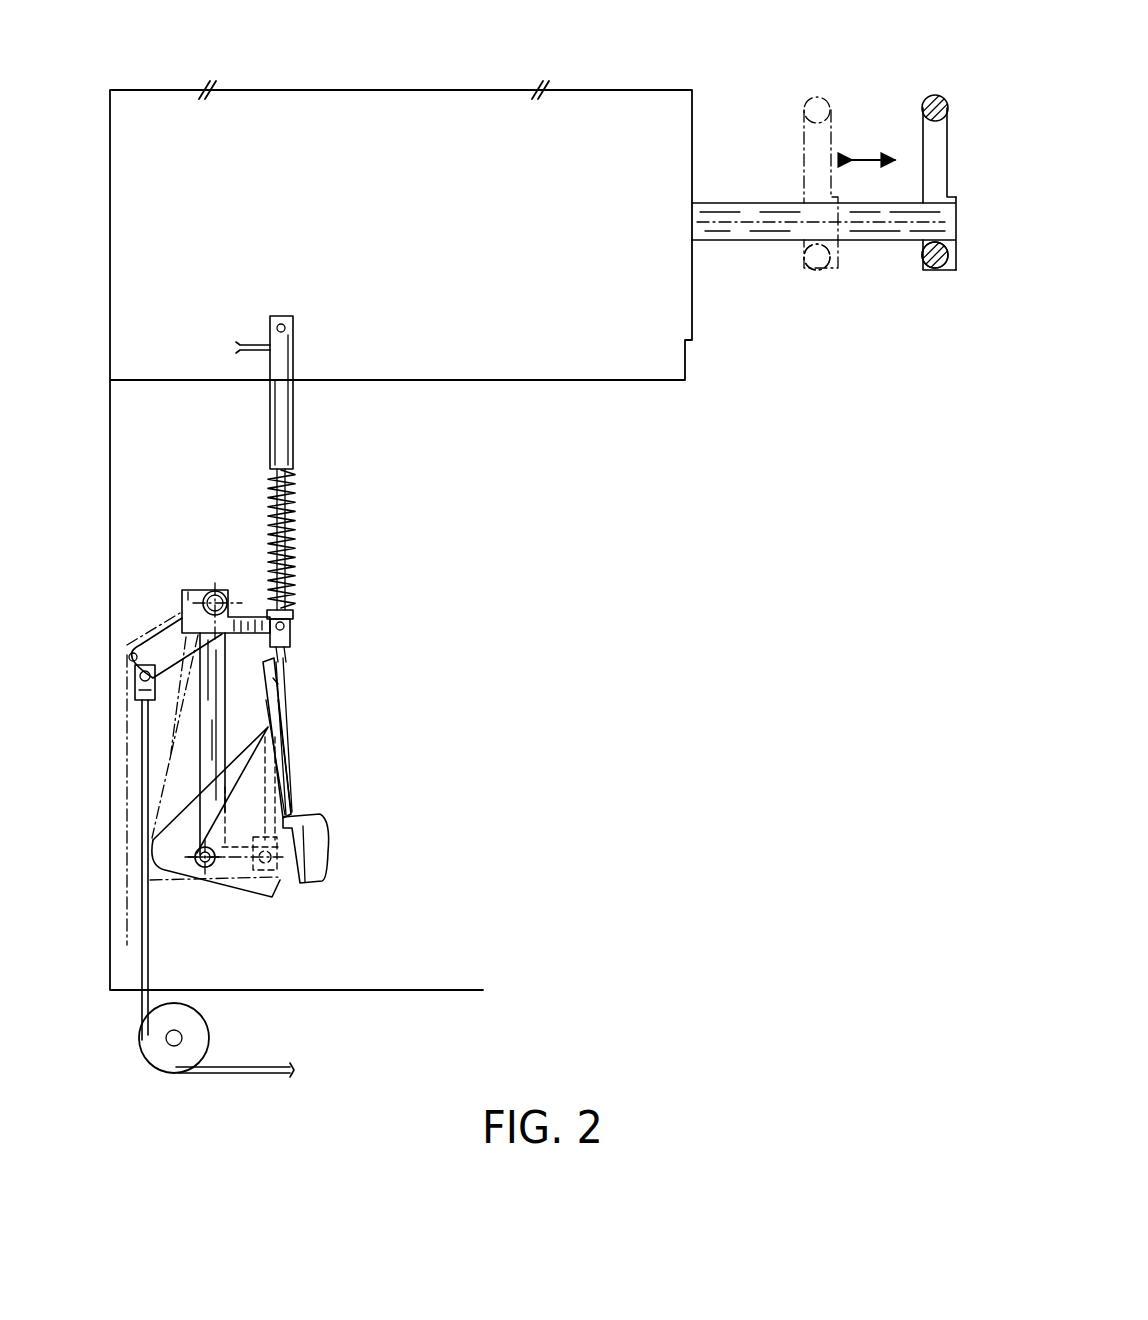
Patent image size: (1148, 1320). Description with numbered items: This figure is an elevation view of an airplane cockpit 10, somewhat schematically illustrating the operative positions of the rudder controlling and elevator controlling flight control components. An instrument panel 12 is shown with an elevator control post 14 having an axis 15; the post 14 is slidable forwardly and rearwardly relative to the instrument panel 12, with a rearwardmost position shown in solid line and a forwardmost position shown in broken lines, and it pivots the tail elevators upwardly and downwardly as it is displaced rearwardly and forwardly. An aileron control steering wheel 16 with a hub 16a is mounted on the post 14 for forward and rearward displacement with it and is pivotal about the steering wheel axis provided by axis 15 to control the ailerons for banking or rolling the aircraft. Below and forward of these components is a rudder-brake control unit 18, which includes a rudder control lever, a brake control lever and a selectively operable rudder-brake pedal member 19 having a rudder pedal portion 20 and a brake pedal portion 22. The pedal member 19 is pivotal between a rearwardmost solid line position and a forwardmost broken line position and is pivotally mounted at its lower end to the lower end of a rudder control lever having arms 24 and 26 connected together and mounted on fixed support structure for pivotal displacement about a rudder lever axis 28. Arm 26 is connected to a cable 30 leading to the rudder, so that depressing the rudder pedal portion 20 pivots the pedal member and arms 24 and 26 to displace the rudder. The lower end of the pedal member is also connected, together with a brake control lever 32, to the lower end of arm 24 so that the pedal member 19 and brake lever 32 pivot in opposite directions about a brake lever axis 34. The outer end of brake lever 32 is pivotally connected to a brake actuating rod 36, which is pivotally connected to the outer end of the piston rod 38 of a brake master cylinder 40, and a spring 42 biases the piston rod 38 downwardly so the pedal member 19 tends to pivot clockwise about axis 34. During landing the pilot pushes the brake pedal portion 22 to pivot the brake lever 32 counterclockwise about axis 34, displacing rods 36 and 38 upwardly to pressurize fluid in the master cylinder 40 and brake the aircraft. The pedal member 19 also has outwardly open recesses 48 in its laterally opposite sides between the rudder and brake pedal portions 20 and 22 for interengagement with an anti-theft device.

The airplane cockpit 10 is at (784, 654).
The instrument panel 12 is at (692, 112).
The elevator control post 14 is at (737, 233).
The axis 15 is at (725, 222).
The aileron control steering wheel 16 is at (917, 96).
The hub 16a is at (838, 262).
The rudder-brake control unit 18 is at (197, 511).
The rudder-brake pedal member 19 is at (294, 764).
The rudder pedal portion 20 is at (329, 840).
The brake pedal portion 22 is at (271, 702).
The arm 24 is at (218, 740).
The arm 26 is at (166, 643).
The rudder lever axis 28 is at (218, 592).
The cable 30 is at (149, 977).
The brake control lever 32 is at (238, 867).
The brake lever axis 34 is at (207, 868).
The brake actuating rod 36 is at (283, 657).
The piston rod 38 is at (285, 517).
The brake master cylinder 40 is at (288, 417).
The spring 42 is at (290, 483).
The recess 48 is at (289, 797).